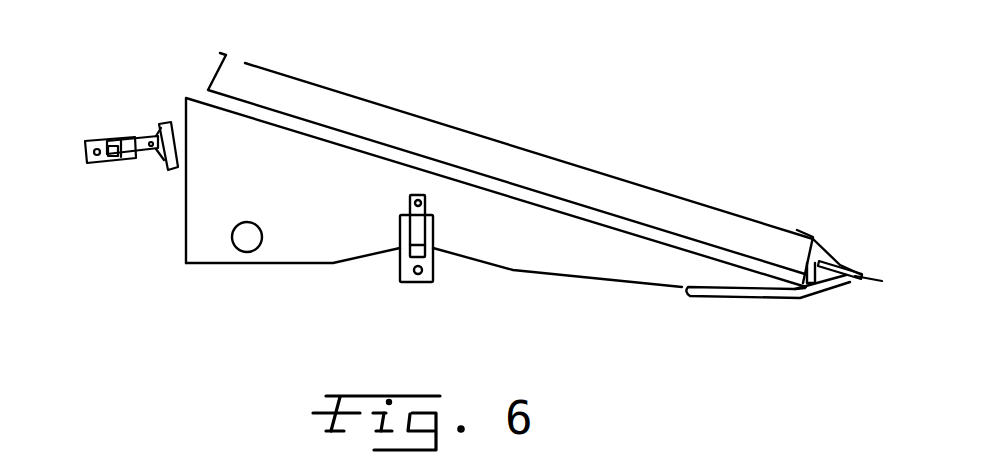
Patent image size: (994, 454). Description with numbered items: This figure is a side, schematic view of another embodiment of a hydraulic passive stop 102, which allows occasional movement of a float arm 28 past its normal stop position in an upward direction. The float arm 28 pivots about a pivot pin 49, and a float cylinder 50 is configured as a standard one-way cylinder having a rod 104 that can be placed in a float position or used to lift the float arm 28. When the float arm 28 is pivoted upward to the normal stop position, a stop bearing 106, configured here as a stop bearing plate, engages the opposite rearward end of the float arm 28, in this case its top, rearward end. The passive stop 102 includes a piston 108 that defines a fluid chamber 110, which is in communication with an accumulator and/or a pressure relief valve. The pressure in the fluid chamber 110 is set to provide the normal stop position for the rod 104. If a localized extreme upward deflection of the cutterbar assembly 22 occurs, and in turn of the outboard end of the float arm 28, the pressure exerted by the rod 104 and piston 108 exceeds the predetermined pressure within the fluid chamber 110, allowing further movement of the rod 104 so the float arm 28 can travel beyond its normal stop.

The cutterbar assembly 22 is at (860, 273).
The float arm 28 is at (330, 247).
The pivot pin 49 is at (241, 250).
The float cylinder 50 is at (440, 268).
The hydraulic passive stop 102 is at (118, 137).
The rod 104 is at (127, 140).
The stop bearing 106 is at (168, 121).
The piston 108 is at (118, 140).
The fluid chamber 110 is at (139, 181).